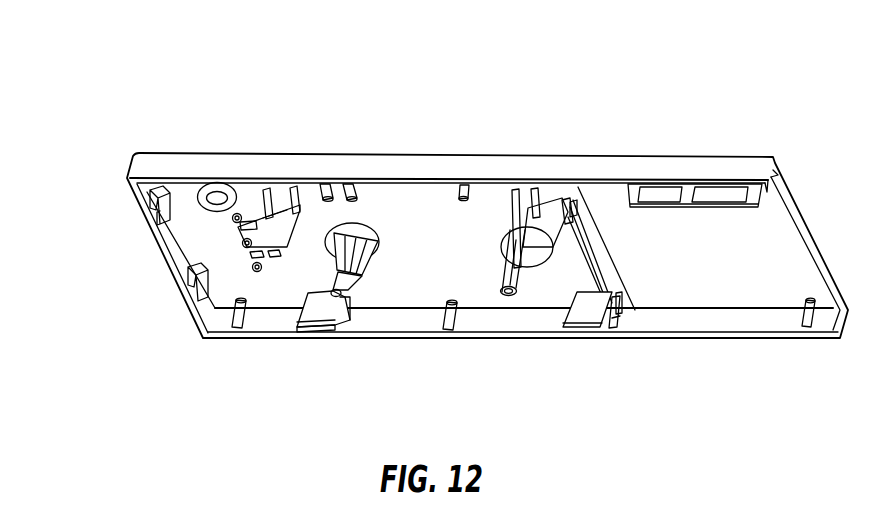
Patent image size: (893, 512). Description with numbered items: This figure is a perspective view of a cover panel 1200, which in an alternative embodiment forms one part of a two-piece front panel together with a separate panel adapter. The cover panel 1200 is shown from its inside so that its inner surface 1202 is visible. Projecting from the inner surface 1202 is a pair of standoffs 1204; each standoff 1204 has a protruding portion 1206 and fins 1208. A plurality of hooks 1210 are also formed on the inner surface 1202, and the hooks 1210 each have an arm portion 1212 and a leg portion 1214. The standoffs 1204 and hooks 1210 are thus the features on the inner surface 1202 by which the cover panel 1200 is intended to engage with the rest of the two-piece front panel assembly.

The cover panel 1200 is at (160, 152).
The inner surface 1202 is at (383, 213).
The standoffs 1204 is at (513, 285).
The protruding portions 1206 is at (509, 299).
The fins 1208 is at (512, 243).
The hooks 1210 is at (283, 207).
The arm portions 1212 is at (323, 330).
The leg portions 1214 is at (317, 300).